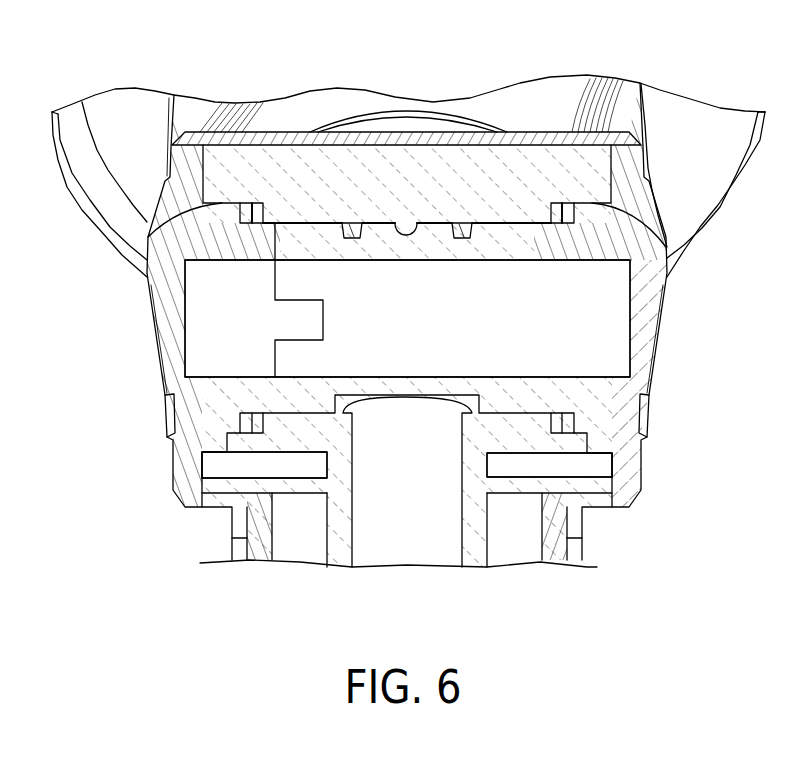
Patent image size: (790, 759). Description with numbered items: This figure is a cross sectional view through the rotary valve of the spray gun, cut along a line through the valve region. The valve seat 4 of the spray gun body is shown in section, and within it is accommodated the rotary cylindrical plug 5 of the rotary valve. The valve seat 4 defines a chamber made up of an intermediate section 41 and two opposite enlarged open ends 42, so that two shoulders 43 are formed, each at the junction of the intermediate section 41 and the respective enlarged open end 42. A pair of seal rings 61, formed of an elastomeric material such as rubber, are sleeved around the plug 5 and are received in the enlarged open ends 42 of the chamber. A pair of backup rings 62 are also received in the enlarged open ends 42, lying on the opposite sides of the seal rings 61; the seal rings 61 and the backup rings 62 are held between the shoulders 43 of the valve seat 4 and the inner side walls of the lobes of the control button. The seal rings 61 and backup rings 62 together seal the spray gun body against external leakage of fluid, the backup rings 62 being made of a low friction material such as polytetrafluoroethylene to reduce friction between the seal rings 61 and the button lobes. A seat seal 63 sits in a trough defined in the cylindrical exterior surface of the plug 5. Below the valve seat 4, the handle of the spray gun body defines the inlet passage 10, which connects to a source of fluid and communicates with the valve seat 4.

The valve seat 4 is at (477, 163).
The intermediate section 41 is at (407, 222).
The enlarged open ends 42 is at (147, 223).
The shoulders 43 is at (252, 217).
The rotary cylindrical plug 5 is at (414, 248).
The seal rings 61 is at (257, 224).
The backup rings 62 is at (243, 224).
The seat seal 63 is at (355, 239).
The inlet passage 10 is at (418, 504).